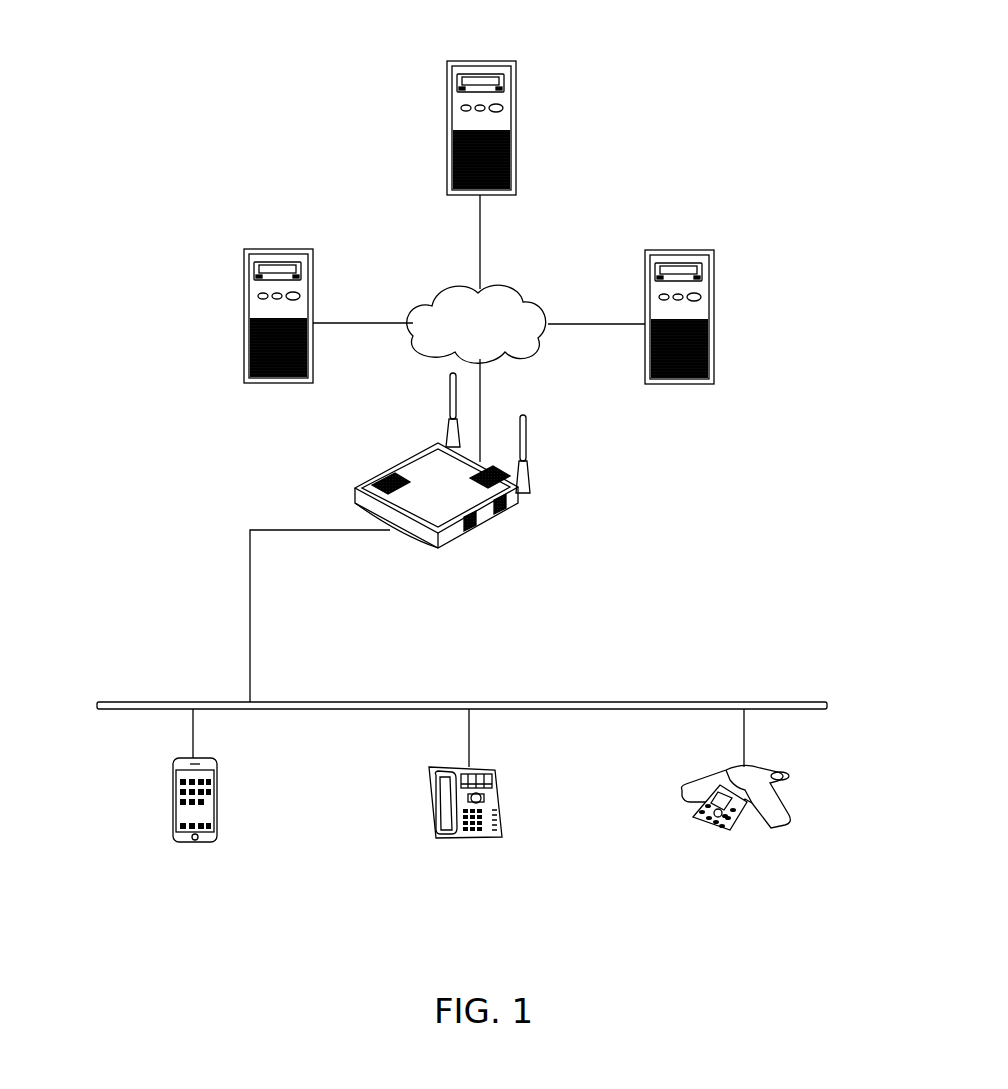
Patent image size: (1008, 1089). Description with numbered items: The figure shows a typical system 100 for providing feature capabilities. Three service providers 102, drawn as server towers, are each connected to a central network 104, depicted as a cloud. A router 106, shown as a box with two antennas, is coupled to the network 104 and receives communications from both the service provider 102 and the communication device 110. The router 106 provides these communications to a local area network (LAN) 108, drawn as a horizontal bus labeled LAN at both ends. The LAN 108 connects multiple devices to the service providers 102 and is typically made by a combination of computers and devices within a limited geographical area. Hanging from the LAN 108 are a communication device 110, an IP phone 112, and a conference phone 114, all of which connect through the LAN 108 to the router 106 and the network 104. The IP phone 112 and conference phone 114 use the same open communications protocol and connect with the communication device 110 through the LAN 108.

The system 100 is at (181, 106).
The service provider 102 is at (481, 60).
The network 104 is at (518, 283).
The router 106 is at (388, 470).
The local area network (LAN) 108 is at (558, 702).
The communication device 110 is at (193, 843).
The IP phone 112 is at (471, 839).
The conference phone 114 is at (725, 832).